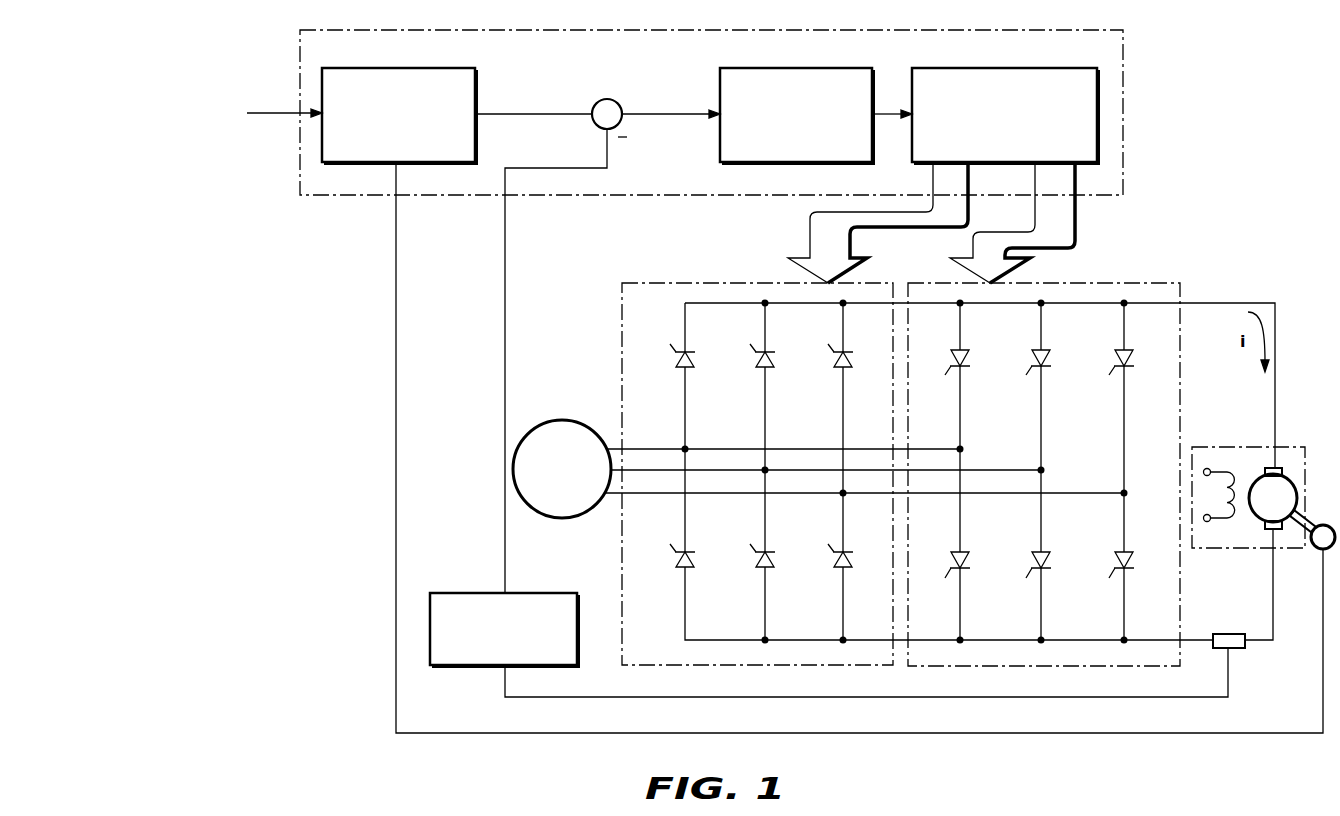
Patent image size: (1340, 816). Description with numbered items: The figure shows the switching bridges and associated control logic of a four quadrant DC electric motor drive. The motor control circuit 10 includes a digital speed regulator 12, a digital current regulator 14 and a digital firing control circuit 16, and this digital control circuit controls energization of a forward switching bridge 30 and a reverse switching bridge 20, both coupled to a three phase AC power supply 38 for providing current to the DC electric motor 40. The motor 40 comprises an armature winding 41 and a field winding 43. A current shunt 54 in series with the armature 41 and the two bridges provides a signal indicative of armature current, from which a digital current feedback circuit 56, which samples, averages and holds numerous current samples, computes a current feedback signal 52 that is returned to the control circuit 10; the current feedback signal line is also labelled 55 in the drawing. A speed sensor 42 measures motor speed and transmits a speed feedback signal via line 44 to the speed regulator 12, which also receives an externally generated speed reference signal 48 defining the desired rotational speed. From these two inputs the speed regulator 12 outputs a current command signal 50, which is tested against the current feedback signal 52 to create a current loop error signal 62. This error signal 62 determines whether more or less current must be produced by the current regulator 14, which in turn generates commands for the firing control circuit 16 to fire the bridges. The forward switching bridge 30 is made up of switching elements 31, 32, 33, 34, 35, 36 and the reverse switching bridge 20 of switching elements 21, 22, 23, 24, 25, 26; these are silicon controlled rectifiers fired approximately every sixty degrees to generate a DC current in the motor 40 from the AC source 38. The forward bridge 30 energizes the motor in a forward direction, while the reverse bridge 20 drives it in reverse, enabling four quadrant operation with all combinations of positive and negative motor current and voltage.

The motor control circuit 10 is at (1124, 60).
The digital speed regulator 12 is at (466, 68).
The digital current regulator 14 is at (845, 68).
The digital firing control circuit 16 is at (1035, 68).
The reverse switching bridge 20 is at (1181, 297).
The switching element 21 is at (969, 368).
The switching element 22 is at (1050, 368).
The switching element 23 is at (1133, 368).
The switching element 24 is at (968, 551).
The switching element 25 is at (1049, 551).
The switching element 26 is at (1132, 551).
The forward switching bridge 30 is at (622, 283).
The switching element 31 is at (695, 354).
The switching element 32 is at (775, 354).
The switching element 33 is at (853, 354).
The switching element 34 is at (696, 551).
The switching element 35 is at (776, 551).
The switching element 36 is at (854, 551).
The AC power supply 38 is at (587, 422).
The DC electric motor 40 is at (1264, 484).
The armature winding 41 is at (1253, 509).
The speed sensor 42 is at (1333, 526).
The field winding 43 is at (1226, 457).
The speed feedback signal line 44 is at (1323, 585).
The speed reference signal 48 is at (279, 115).
The current command signal 50 is at (509, 116).
The current feedback signal 52 is at (607, 156).
The current shunt 54 is at (1233, 634).
The current feedback signal 55 is at (897, 699).
The digital current feedback circuit 56 is at (458, 593).
The current loop error signal 62 is at (677, 116).